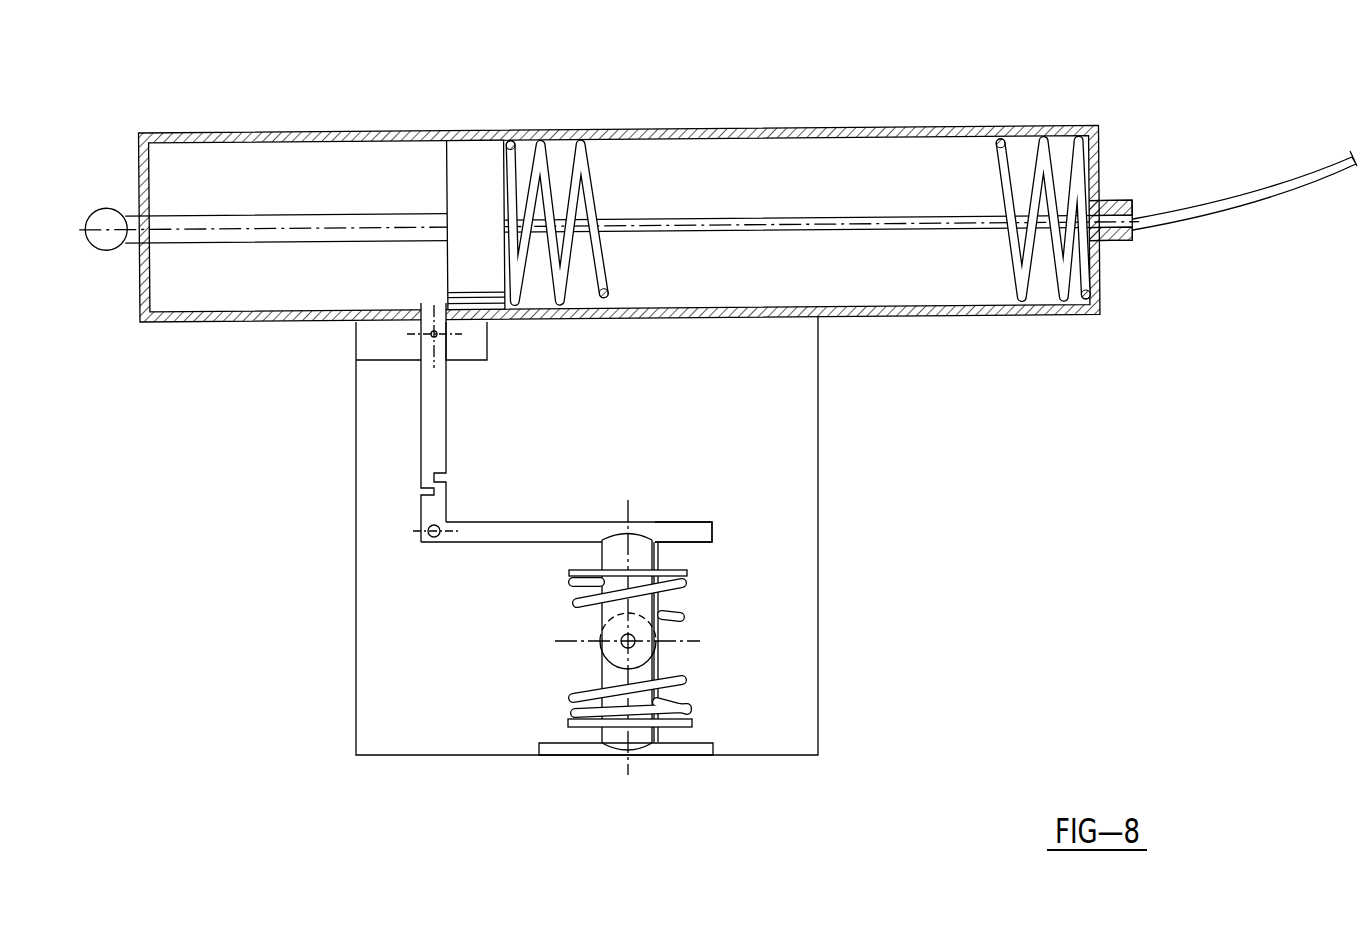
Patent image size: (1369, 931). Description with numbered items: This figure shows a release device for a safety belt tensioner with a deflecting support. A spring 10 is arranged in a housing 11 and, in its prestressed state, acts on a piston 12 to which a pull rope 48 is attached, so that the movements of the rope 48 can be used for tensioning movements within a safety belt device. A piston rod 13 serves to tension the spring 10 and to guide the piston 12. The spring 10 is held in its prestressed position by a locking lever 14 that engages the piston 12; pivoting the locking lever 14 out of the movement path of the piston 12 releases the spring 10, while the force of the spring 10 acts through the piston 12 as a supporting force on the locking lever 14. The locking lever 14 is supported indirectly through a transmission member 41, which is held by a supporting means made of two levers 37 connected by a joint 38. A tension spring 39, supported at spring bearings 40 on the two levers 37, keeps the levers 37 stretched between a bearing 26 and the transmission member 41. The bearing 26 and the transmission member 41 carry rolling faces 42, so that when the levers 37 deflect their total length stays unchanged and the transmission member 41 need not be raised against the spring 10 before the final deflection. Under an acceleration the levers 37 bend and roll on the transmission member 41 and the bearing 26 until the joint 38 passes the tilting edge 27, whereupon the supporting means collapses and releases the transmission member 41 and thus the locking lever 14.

The spring 10 is at (585, 145).
The housing 11 is at (770, 132).
The piston 12 is at (488, 160).
The piston rod 13 is at (286, 220).
The locking lever 14 is at (430, 397).
The bearing 26 is at (613, 750).
The tilting edge 27 is at (695, 537).
The levers 37 is at (660, 555).
The joint 38 is at (627, 641).
The tension spring 39 is at (682, 683).
The spring bearings 40 is at (690, 573).
The transmission member 41 is at (510, 528).
The rolling faces 42 is at (645, 535).
The pull rope 48 is at (1238, 198).